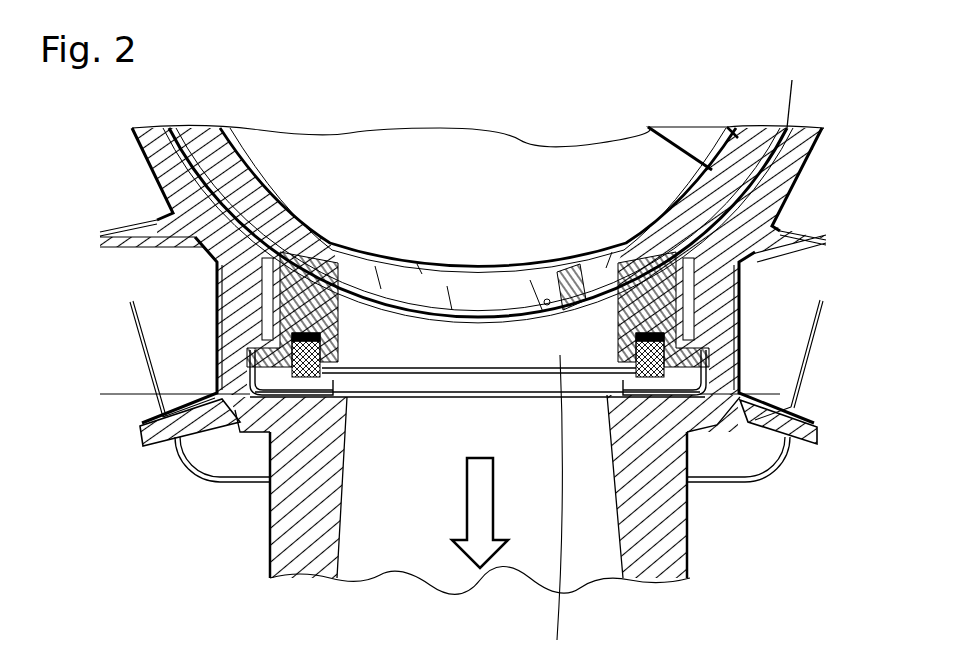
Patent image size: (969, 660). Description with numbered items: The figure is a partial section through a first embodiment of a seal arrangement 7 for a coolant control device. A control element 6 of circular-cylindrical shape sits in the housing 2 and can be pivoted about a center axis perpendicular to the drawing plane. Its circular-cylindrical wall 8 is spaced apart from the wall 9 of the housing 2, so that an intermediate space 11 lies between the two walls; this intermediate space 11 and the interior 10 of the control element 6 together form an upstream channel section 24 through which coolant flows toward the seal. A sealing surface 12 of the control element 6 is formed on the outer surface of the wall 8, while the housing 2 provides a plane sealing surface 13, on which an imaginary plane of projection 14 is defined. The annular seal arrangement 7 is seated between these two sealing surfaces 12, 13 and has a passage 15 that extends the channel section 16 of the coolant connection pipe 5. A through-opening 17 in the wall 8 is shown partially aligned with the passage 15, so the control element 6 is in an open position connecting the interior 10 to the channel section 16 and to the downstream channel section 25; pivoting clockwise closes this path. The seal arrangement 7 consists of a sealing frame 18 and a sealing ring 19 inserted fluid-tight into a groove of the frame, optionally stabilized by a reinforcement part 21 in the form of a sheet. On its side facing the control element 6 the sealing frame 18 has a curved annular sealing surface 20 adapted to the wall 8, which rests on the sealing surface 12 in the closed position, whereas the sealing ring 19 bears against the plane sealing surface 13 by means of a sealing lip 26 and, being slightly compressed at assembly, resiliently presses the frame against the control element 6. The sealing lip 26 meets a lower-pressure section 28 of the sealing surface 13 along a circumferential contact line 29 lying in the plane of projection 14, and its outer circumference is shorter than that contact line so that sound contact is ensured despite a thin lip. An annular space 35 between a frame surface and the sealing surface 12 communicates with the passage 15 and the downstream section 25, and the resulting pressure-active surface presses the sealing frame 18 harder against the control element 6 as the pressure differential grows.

The housing 2 is at (155, 163).
The coolant connection pipe 5 is at (677, 547).
The control element 6 is at (748, 122).
The seal arrangement 7 is at (705, 357).
The circular-cylindrical wall 8 is at (197, 133).
The wall 9 is at (146, 140).
The interior 10 is at (350, 148).
The intermediate space 11 is at (168, 130).
The sealing surface 12 is at (785, 100).
The plane sealing surface 13 is at (357, 373).
The plane of projection 14 is at (121, 395).
The passage 15 is at (552, 507).
The channel section 16 is at (372, 567).
The through-opening 17 is at (486, 300).
The sealing frame 18 is at (296, 300).
The sealing ring 19 is at (203, 468).
The annular sealing surface 20 is at (292, 248).
The reinforcement part 21 is at (260, 337).
The upstream channel section 24 is at (450, 158).
The downstream channel section 25 is at (438, 566).
The sealing lip 26 is at (227, 484).
The section of the sealing surface 28 is at (477, 394).
The contact line 29 is at (313, 400).
The annular space 35 is at (324, 283).